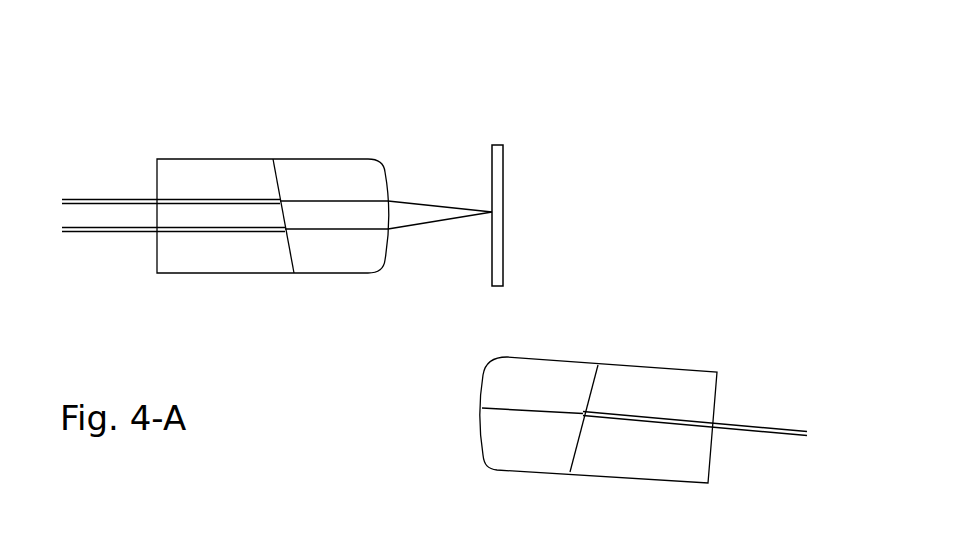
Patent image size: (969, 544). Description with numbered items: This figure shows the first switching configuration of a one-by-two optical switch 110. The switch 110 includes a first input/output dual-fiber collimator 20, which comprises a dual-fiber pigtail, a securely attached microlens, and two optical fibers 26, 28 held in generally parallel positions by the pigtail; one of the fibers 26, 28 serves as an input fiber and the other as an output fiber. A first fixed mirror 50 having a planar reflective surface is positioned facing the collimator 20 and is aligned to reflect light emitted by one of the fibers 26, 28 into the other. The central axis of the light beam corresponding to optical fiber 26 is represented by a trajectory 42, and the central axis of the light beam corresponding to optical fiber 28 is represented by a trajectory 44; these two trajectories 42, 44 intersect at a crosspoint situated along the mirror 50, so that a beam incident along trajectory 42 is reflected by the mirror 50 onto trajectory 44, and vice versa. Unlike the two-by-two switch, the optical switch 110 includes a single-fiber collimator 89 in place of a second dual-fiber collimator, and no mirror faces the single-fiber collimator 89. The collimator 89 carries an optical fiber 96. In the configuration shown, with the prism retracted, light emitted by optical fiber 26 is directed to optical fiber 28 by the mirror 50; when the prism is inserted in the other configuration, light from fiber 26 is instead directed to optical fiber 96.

The first input/output dual-fiber collimator 20 is at (284, 116).
The optical fiber 26 is at (100, 190).
The optical fiber 28 is at (98, 242).
The trajectory 42 is at (369, 190).
The trajectory 44 is at (356, 239).
The first fixed mirror 50 is at (511, 118).
The single-fiber collimator 89 is at (628, 329).
The optical fiber 96 is at (742, 442).
The 1×2 optical switch 110 is at (676, 81).